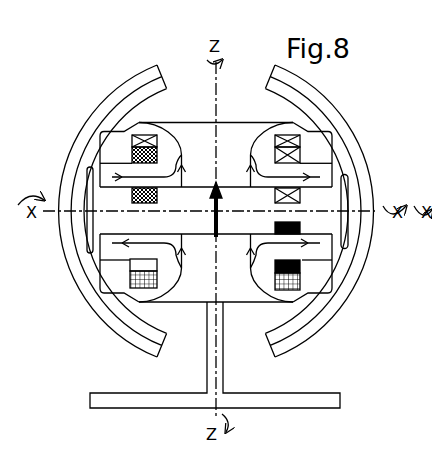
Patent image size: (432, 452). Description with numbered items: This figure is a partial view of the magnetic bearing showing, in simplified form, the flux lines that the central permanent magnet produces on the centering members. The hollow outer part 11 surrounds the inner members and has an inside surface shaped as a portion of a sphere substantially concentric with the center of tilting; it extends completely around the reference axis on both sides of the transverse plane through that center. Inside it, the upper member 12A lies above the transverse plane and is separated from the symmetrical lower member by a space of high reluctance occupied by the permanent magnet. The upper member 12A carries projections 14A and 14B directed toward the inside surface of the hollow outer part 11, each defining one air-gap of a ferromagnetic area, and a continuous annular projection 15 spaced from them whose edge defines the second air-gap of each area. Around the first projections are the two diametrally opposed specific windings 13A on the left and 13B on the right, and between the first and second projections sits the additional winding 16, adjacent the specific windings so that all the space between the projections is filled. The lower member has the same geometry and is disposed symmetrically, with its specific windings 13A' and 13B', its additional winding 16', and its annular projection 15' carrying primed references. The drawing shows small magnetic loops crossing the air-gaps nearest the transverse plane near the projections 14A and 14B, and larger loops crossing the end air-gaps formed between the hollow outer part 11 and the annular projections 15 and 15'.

The hollow outer part 11 is at (112, 331).
The upper member 12A is at (170, 120).
The specific winding 13A is at (85, 194).
The specific winding of lower member 13A' is at (88, 280).
The specific winding 13B is at (341, 169).
The specific winding of lower member 13B' is at (344, 235).
The projection 14A is at (105, 172).
The projection 14B is at (331, 173).
The annular projection 15 is at (319, 138).
The annular projection of lower member 15' is at (319, 284).
The additional winding 16 is at (330, 128).
The additional winding of lower member 16' is at (333, 288).